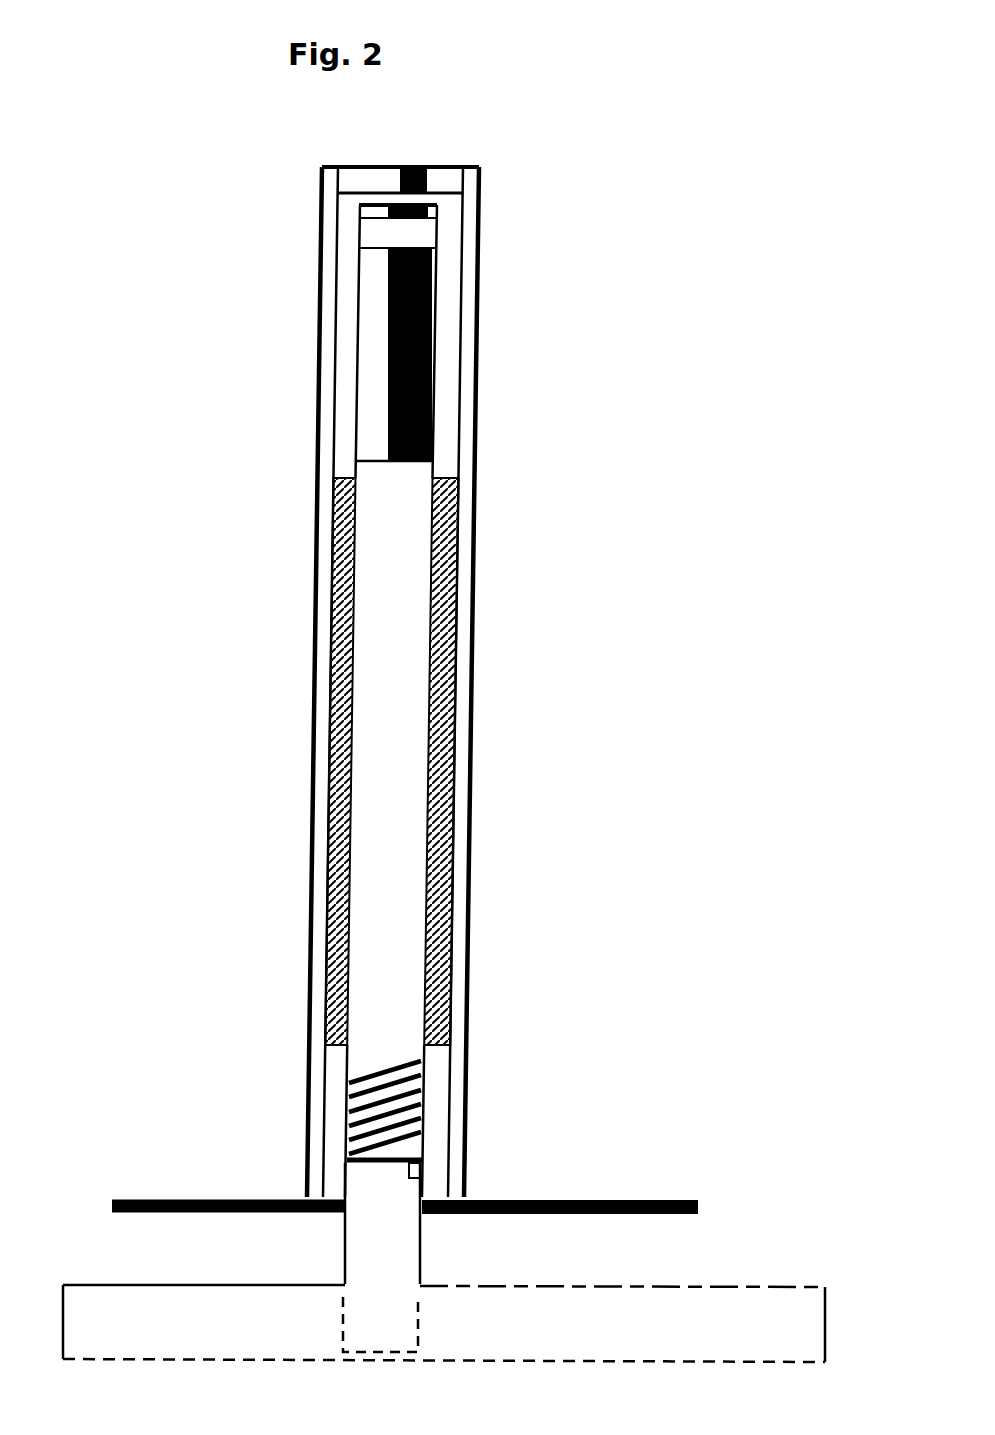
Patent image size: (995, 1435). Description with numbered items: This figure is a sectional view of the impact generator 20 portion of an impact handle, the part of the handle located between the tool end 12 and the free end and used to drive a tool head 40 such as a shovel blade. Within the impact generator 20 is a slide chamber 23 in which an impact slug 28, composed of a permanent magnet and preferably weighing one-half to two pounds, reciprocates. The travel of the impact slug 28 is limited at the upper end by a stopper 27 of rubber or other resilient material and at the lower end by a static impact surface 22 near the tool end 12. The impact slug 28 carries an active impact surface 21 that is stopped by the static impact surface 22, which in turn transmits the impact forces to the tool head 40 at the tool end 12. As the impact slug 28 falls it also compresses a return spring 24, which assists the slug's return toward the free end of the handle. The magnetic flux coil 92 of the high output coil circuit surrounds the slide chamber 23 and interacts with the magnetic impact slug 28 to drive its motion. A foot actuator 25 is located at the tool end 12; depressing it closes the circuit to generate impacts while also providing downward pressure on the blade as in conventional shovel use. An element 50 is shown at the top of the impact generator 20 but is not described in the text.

The tool end 12 is at (384, 1325).
The impact generator 20 is at (472, 676).
The active impact surface 21 is at (374, 462).
The static impact surface 22 is at (368, 1160).
The slide chamber 23 is at (390, 925).
The return spring 24 is at (412, 1123).
The foot actuator 25 is at (186, 1199).
The stopper 27 is at (423, 217).
The impact slug 28 is at (430, 323).
The tool head 40 is at (190, 1330).
The plug 50 is at (418, 167).
The magnetic flux coil CZ 1 92 is at (433, 500).